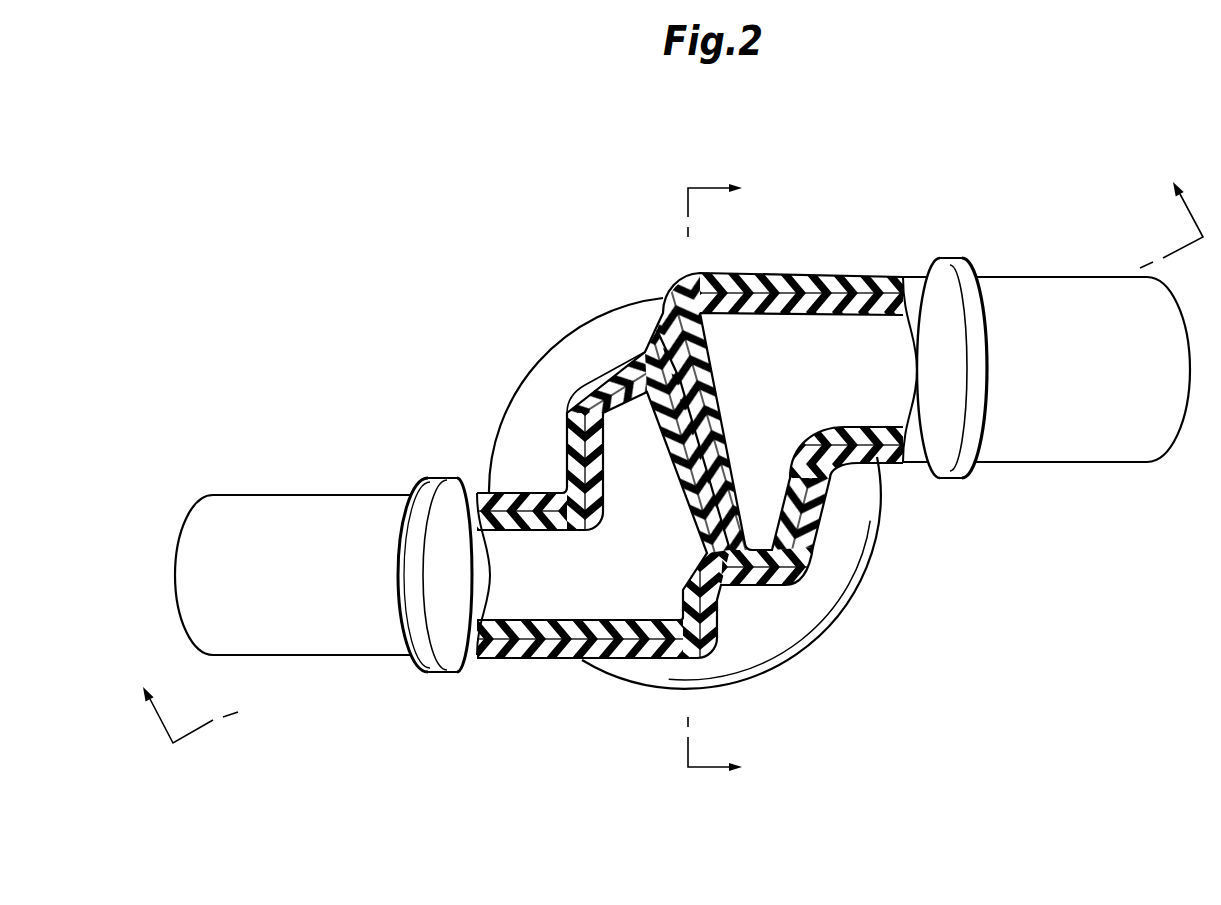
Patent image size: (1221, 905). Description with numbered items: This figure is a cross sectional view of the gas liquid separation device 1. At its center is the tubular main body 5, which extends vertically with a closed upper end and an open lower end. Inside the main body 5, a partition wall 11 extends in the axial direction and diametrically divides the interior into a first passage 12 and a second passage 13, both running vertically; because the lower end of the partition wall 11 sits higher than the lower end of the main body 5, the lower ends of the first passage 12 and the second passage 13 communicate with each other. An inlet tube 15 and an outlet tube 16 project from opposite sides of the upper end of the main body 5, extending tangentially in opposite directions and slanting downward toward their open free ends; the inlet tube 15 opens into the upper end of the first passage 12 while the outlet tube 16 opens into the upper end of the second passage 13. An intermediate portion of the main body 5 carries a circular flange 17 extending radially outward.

The gas liquid separation device 1 is at (458, 282).
The main body 5 is at (593, 315).
The circular flange 17 is at (530, 397).
The first passage 12 is at (765, 318).
The partition wall 11 is at (708, 418).
The second passage 13 is at (637, 622).
The inlet tube 15 is at (1057, 277).
The outlet tube 16 is at (333, 647).